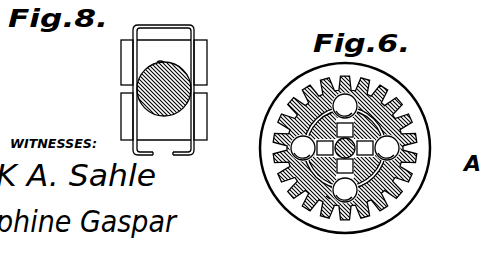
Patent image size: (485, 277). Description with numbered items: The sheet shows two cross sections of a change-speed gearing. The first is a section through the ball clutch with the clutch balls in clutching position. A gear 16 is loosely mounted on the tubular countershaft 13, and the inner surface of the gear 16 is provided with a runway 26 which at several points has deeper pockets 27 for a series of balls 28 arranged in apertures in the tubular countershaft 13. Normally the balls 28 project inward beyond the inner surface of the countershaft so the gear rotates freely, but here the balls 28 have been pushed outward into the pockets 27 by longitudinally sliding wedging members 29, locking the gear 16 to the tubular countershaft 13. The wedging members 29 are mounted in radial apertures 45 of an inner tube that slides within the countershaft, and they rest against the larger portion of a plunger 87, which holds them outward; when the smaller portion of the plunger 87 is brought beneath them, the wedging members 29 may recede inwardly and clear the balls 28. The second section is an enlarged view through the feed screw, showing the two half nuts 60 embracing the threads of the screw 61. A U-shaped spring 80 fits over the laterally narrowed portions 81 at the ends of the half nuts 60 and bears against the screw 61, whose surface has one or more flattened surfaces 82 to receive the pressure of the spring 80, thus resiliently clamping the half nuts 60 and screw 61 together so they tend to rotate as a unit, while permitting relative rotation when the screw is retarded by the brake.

In FIG. 6, the tubular countershaft 13 is at (322, 190).
In FIG. 6, the gear 16 is at (318, 172).
In FIG. 6, the runway 26 is at (325, 127).
In FIG. 6, the pockets 27 is at (312, 153).
In FIG. 6, the balls 28 is at (352, 92).
In FIG. 6, the wedging members 29 is at (383, 112).
In FIG. 6, the radial apertures 45 is at (325, 127).
In FIG. 6, the plunger 87 is at (326, 196).
In FIG. 8, the half nuts 60 is at (200, 67).
In FIG. 8, the screw 61 is at (170, 83).
In FIG. 8, the U-shaped spring 80 is at (196, 34).
In FIG. 8, the laterally narrowed portions 81 is at (153, 49).
In FIG. 8, the flattened surfaces 82 is at (157, 62).